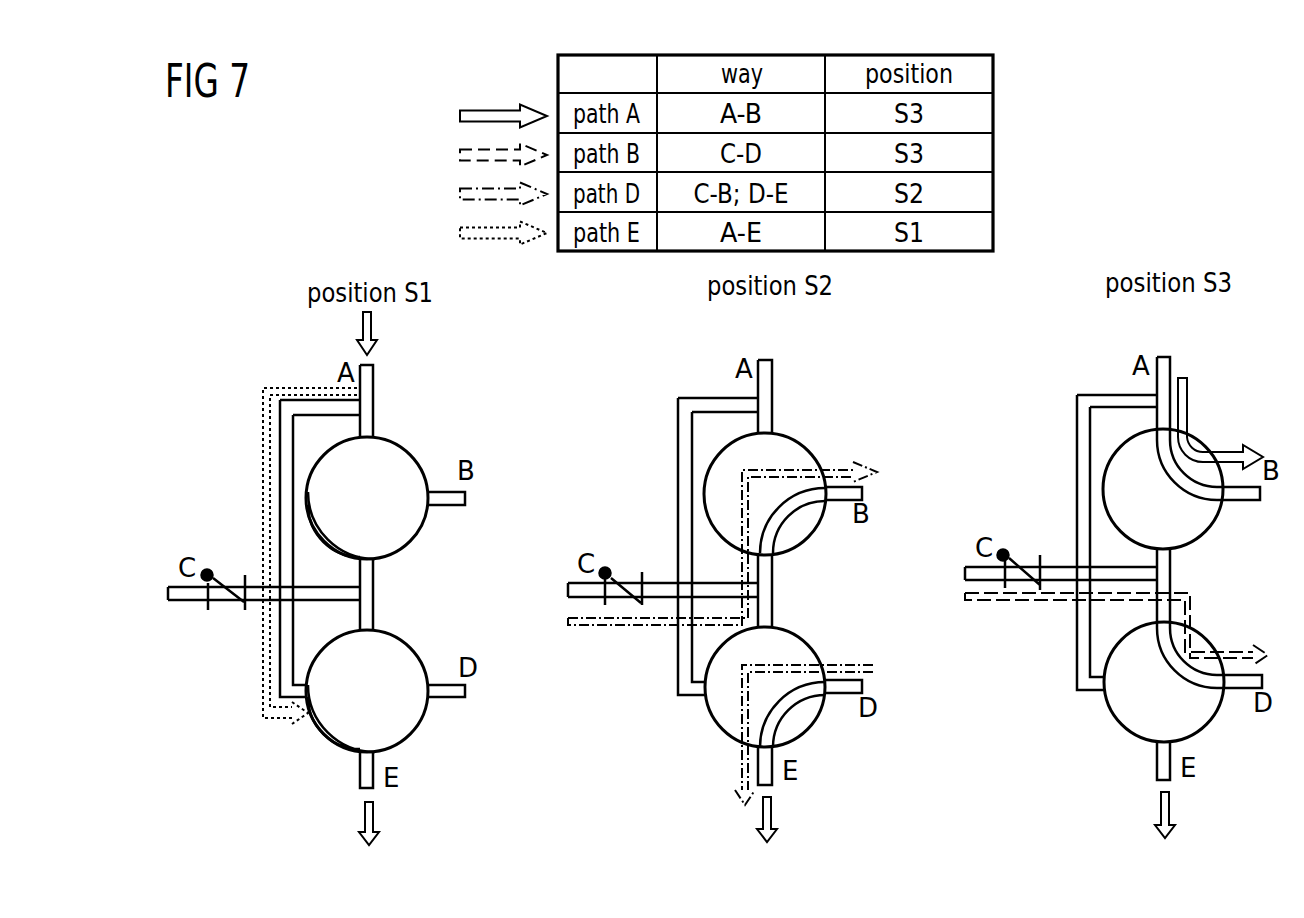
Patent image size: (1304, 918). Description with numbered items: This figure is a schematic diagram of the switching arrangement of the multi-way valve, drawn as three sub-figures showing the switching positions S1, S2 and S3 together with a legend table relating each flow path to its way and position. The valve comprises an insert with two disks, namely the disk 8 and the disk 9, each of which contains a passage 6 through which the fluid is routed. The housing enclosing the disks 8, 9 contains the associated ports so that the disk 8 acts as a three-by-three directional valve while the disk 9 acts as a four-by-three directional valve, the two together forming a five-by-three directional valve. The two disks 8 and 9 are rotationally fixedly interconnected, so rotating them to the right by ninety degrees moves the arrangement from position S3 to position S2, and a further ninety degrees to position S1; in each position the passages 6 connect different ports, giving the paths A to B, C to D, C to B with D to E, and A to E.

The passage 6 is at (358, 516).
The disk 8 is at (393, 458).
The disk 9 is at (408, 720).